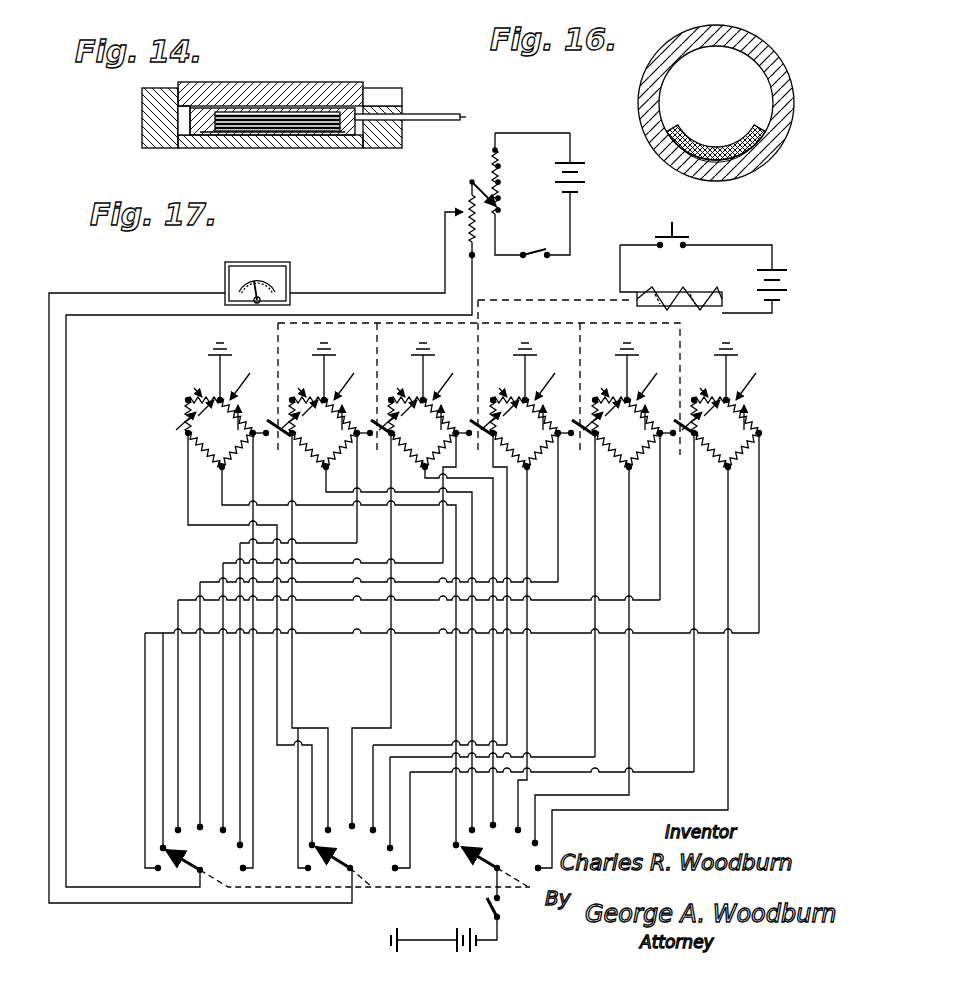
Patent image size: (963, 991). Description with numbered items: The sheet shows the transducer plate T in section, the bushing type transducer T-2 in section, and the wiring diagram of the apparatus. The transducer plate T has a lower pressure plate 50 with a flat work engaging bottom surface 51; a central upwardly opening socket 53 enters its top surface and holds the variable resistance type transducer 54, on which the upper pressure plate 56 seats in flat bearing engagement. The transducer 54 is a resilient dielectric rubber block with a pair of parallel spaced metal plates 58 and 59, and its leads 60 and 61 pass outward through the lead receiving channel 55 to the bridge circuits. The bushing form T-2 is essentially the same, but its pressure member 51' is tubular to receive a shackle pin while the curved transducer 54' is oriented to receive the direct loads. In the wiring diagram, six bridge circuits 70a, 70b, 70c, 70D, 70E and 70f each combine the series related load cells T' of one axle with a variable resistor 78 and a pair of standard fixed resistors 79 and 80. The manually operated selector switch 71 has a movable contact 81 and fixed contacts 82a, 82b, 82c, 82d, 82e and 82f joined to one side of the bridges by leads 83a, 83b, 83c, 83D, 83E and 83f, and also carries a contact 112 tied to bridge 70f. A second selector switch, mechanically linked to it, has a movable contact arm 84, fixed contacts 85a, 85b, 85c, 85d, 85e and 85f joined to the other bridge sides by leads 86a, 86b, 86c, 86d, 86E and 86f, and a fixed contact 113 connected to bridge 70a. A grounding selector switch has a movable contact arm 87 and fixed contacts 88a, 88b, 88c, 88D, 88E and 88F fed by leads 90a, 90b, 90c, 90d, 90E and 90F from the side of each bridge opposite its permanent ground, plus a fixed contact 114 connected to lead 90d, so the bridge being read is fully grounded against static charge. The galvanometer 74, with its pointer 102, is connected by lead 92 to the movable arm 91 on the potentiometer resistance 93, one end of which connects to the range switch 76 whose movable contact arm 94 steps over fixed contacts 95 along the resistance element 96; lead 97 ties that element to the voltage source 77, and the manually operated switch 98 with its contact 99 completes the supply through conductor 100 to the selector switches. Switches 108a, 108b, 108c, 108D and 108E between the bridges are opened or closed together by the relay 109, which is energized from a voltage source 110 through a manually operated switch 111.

In FIG. 14, the transducer plate T is at (265, 114).
In FIG. 14, the lower pressure plate 50 is at (332, 140).
In FIG. 14, the work engaging bottom surface 51 is at (402, 85).
In FIG. 14, the socket 53 is at (212, 140).
In FIG. 14, the variable resistance type transducer 54 is at (270, 84).
In FIG. 14, the lead receiving channel 55 is at (402, 117).
In FIG. 14, the upper pressure plate 56 is at (320, 108).
In FIG. 14, the metal plate 58 is at (266, 140).
In FIG. 14, the metal plate 59 is at (290, 140).
In FIG. 14, the lead 60 is at (320, 112).
In FIG. 14, the lead 61 is at (322, 135).
In FIG. 16, the annular housing 51' is at (718, 97).
In FIG. 16, the bushing type transducer T-2 is at (688, 97).
In FIG. 16, the transducer 54' is at (716, 140).
In FIG. 17, the bridge circuit 70a is at (207, 418).
In FIG. 17, the bridge circuit 70b is at (320, 406).
In FIG. 17, the bridge circuit 70c is at (419, 406).
In FIG. 17, the bridge circuit 70D is at (521, 406).
In FIG. 17, the bridge circuit 70E is at (623, 406).
In FIG. 17, the bridge circuit 70f is at (738, 486).
In FIG. 17, the transducer element T' is at (181, 397).
In FIG. 17, the selector switch 71 is at (135, 875).
In FIG. 17, the galvanometer 74 is at (273, 271).
In FIG. 17, the range switch 76 is at (474, 181).
In FIG. 17, the voltage source 77 is at (584, 180).
In FIG. 17, the variable resistor 78 is at (240, 412).
In FIG. 17, the standard fixed resistor 79 is at (205, 458).
In FIG. 17, the standard fixed resistor 80 is at (238, 456).
In FIG. 17, the movable contact 81 is at (180, 880).
In FIG. 17, the fixed contact 82a is at (158, 849).
In FIG. 17, the fixed contact 82b is at (176, 829).
In FIG. 17, the fixed contact 82c is at (200, 824).
In FIG. 17, the fixed contact 82d is at (223, 833).
In FIG. 17, the fixed contact 82e is at (240, 848).
In FIG. 17, the fixed contact 82f is at (243, 872).
In FIG. 17, the lead 83a is at (255, 535).
In FIG. 17, the lead 83b is at (355, 508).
In FIG. 17, the lead 83c is at (441, 527).
In FIG. 17, the lead 83D is at (560, 530).
In FIG. 17, the lead 83E is at (668, 538).
In FIG. 17, the lead 83f is at (763, 503).
In FIG. 17, the movable contact arm 84 is at (332, 880).
In FIG. 17, the fixed contact 85a is at (310, 845).
In FIG. 17, the fixed contact 85b is at (326, 830).
In FIG. 17, the fixed contact 85c is at (350, 824).
In FIG. 17, the fixed contact 85d is at (372, 832).
In FIG. 17, the fixed contact 85e is at (388, 850).
In FIG. 17, the fixed contact 85f is at (395, 871).
In FIG. 17, the lead 86a is at (280, 648).
In FIG. 17, the lead 86b is at (297, 670).
In FIG. 17, the lead 86c is at (391, 683).
In FIG. 17, the lead 86d is at (400, 743).
In FIG. 17, the lead 86E is at (423, 756).
In FIG. 17, the lead 86f is at (425, 774).
In FIG. 17, the movable contact arm 87 is at (470, 876).
In FIG. 17, the fixed contact 88a is at (454, 846).
In FIG. 17, the fixed contact 88b is at (476, 833).
In FIG. 17, the fixed contact 88c is at (495, 829).
In FIG. 17, the fixed contact 88D is at (522, 831).
In FIG. 17, the fixed contact 88E is at (540, 844).
In FIG. 17, the fixed contact 88F is at (538, 875).
In FIG. 17, the lead 90a is at (453, 653).
In FIG. 17, the lead 90b is at (469, 667).
In FIG. 17, the lead 90c is at (498, 656).
In FIG. 17, the lead 90d is at (529, 676).
In FIG. 17, the lead 90E is at (587, 795).
In FIG. 17, the lead 90F is at (566, 810).
In FIG. 17, the movable arm 91 is at (460, 206).
In FIG. 17, the lead 92 is at (393, 292).
In FIG. 17, the resistance 93 is at (475, 258).
In FIG. 17, the movable contact arm 94 is at (468, 184).
In FIG. 17, the fixed contacts 95 is at (500, 201).
In FIG. 17, the resistance element 96 is at (505, 152).
In FIG. 17, the lead 97 is at (532, 182).
In FIG. 17, the manually operated switch 98 is at (540, 242).
In FIG. 17, the contact 99 is at (523, 258).
In FIG. 17, the meter conductor 100 is at (80, 312).
In FIG. 17, the meter pointer 102 is at (262, 278).
In FIG. 17, the switch 108a is at (272, 442).
In FIG. 17, the switch 108b is at (376, 442).
In FIG. 17, the switch 108c is at (475, 442).
In FIG. 17, the switch 108D is at (577, 441).
In FIG. 17, the switch 108E is at (679, 442).
In FIG. 17, the relay 109 is at (712, 292).
In FIG. 17, the voltage source 110 is at (780, 270).
In FIG. 17, the manually operated switch 111 is at (698, 222).
In FIG. 17, the contact 112 is at (158, 872).
In FIG. 17, the fixed contact 113 is at (308, 872).
In FIG. 17, the fixed contact 114 is at (455, 937).